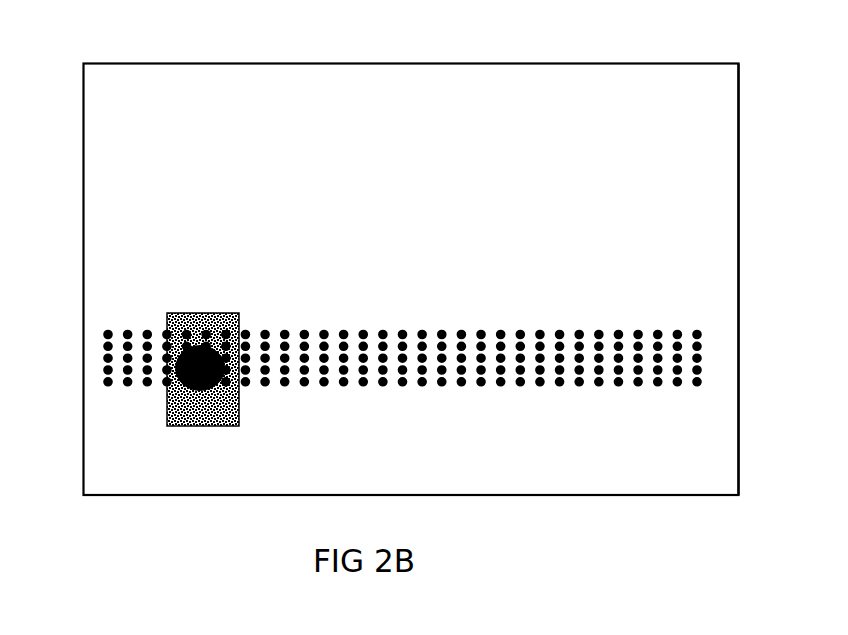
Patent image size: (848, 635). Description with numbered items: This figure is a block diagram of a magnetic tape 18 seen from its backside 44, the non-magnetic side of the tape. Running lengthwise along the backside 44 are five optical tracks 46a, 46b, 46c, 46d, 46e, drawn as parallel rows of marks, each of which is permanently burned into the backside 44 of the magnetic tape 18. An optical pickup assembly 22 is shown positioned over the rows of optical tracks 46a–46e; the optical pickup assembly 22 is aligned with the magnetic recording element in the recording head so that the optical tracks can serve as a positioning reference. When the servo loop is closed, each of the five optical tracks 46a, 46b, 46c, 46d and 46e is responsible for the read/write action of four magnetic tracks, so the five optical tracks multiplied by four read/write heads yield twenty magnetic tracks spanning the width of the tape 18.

The magnetic tape 18 is at (575, 63).
The backside 44 is at (739, 153).
The optical pickup assembly 22 is at (215, 426).
The optical track 46a is at (97, 334).
The optical track 46b is at (97, 346).
The optical track 46c is at (97, 358).
The optical track 46d is at (97, 370).
The optical track 46e is at (97, 382).